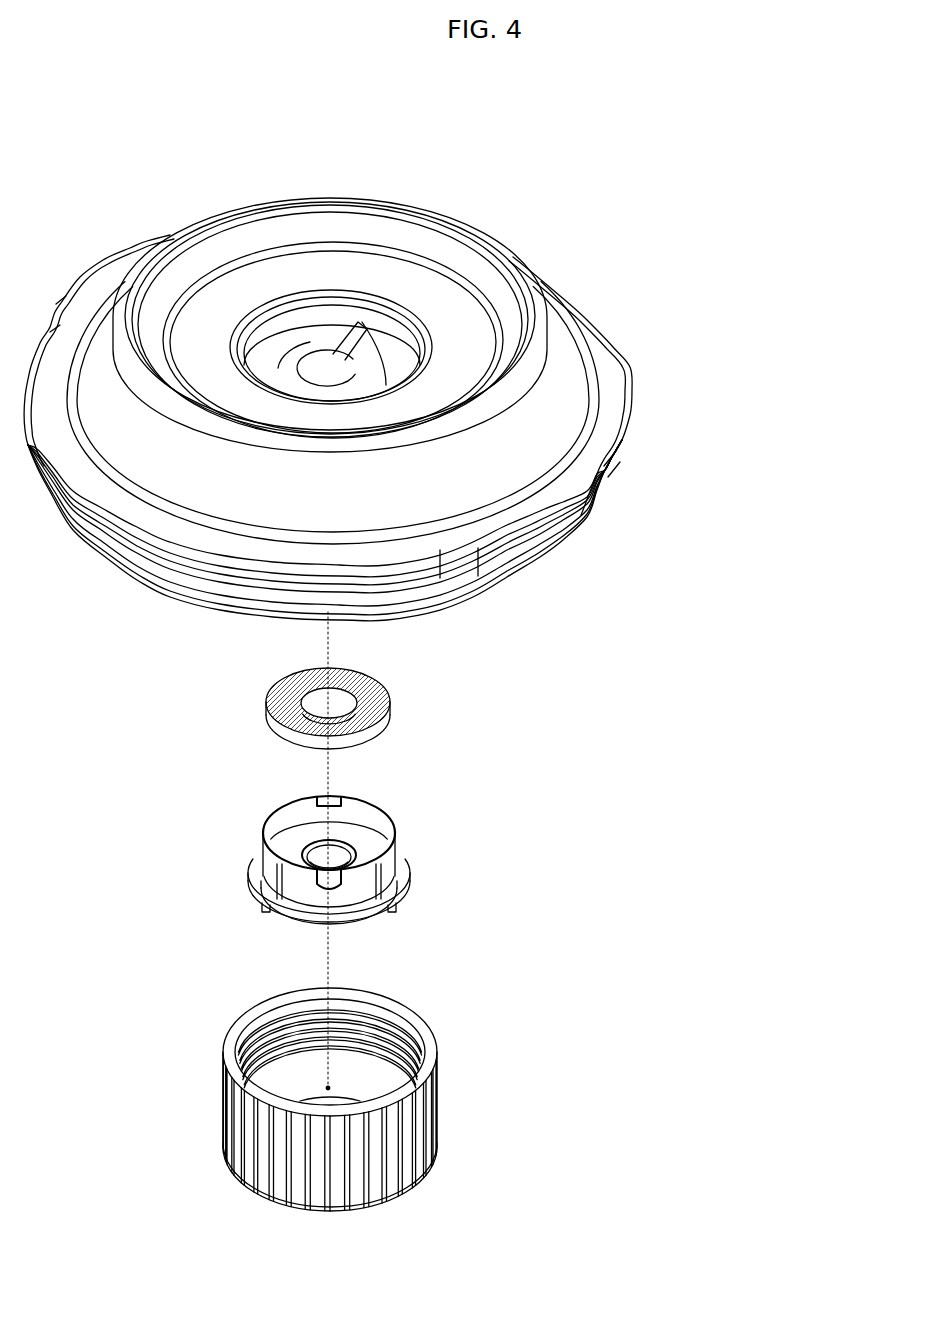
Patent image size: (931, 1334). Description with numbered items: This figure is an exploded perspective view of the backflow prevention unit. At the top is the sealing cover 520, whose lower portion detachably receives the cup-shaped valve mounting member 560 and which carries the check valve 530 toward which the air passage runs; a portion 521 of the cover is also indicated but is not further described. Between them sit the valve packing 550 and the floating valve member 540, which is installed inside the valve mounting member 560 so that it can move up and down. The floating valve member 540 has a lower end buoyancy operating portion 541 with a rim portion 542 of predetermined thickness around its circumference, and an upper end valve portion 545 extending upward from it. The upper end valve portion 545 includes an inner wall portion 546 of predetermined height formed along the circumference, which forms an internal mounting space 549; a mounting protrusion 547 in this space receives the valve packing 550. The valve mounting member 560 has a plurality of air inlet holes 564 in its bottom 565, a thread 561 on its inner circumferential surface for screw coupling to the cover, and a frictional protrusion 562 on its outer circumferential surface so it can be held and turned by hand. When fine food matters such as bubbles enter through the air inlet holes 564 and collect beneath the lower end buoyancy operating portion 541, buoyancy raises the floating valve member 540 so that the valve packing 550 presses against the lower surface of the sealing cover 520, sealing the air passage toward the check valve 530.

The sealing cover 520 is at (348, 362).
The lid skirt flange 521 is at (558, 510).
The check valve 530 is at (355, 325).
The floating valve member 540 is at (356, 844).
The lower end buoyancy operating portion 541 is at (392, 893).
The rim portion 542 is at (305, 922).
The upper end valve portion 545 is at (367, 802).
The inner wall portion 546 is at (265, 860).
The mounting protrusion 547 is at (305, 840).
The internal mounting space 549 is at (369, 838).
The valve packing 550 is at (390, 700).
The valve mounting member 560 is at (397, 1088).
The thread 561 is at (392, 1010).
The frictional protrusion 562 is at (410, 1180).
The air inlet holes 564 is at (260, 1028).
The bottom 565 is at (368, 1085).